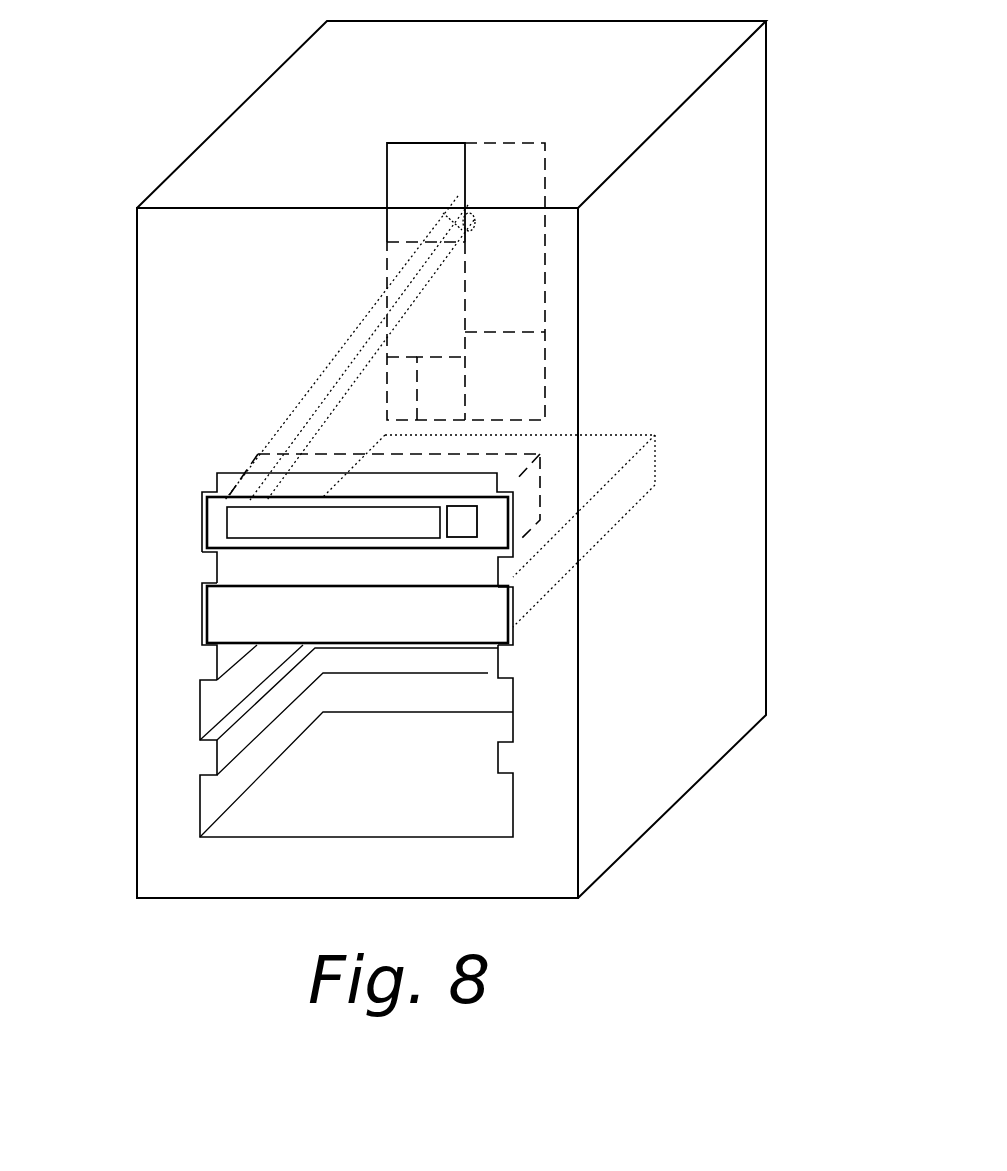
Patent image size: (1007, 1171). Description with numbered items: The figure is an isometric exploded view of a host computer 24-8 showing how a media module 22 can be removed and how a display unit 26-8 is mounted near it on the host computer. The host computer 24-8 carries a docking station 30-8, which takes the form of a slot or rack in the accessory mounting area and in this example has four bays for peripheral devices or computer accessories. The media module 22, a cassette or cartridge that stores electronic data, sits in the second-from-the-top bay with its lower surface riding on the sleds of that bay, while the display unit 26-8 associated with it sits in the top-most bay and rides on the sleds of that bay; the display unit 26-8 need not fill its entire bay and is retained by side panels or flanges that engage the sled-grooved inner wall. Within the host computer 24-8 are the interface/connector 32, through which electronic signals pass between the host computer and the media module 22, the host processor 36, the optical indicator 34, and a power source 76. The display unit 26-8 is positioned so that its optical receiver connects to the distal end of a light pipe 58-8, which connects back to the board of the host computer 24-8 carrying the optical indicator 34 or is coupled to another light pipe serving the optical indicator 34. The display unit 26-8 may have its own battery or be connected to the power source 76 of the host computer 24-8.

The host computer 24-8 is at (735, 223).
The optical indicator 34 is at (437, 118).
The host processor 36 is at (470, 208).
The power source 76 is at (547, 368).
The interface/connector 32 is at (440, 388).
The light pipe 58-8 is at (300, 430).
The display unit 26-8 is at (207, 523).
The media module 22 is at (468, 617).
The docking station 30-8 is at (215, 703).